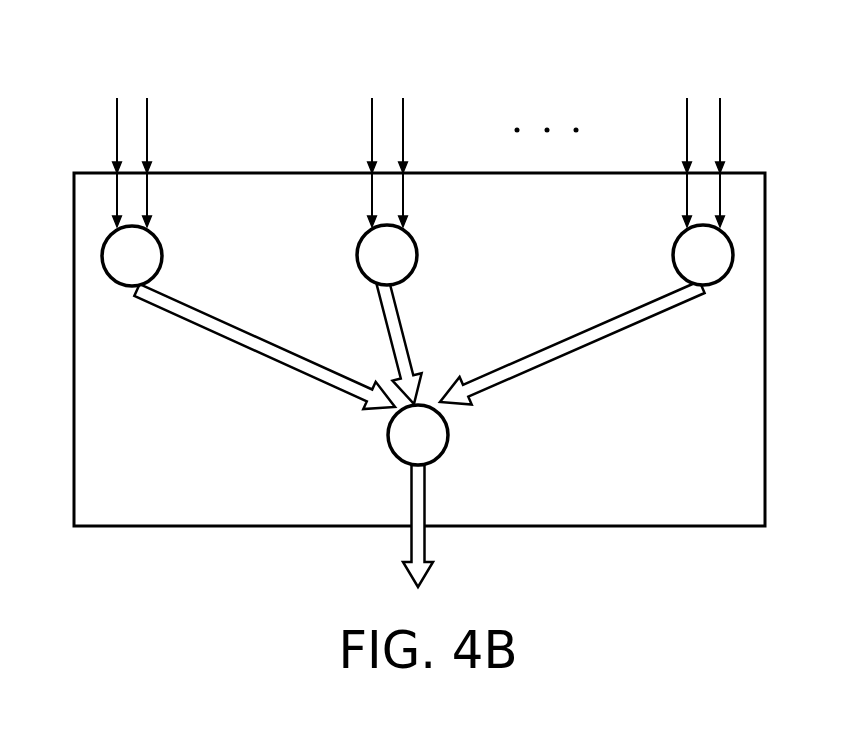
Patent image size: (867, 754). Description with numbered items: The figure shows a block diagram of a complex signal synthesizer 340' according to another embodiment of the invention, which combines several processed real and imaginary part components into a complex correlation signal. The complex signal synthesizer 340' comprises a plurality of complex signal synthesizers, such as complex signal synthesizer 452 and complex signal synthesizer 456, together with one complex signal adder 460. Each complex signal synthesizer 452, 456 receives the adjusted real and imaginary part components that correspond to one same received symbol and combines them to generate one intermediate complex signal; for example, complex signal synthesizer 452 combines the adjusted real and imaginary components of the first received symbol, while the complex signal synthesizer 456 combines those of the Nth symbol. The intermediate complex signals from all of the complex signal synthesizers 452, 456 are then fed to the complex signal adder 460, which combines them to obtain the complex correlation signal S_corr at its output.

The complex signal synthesizer 340' is at (421, 302).
The complex signal synthesizer 452 is at (103, 270).
The complex signal synthesizer 456 is at (733, 268).
The complex signal adder 460 is at (450, 450).